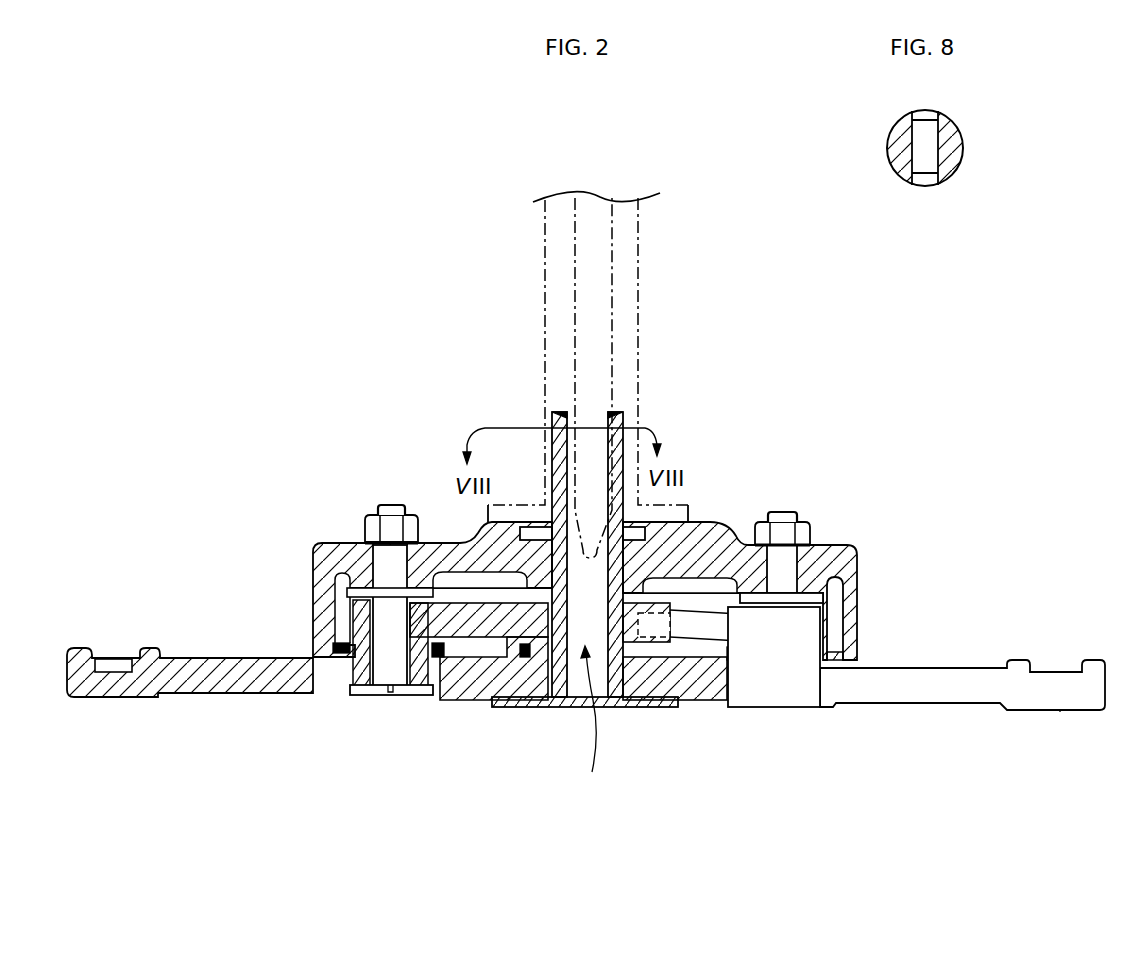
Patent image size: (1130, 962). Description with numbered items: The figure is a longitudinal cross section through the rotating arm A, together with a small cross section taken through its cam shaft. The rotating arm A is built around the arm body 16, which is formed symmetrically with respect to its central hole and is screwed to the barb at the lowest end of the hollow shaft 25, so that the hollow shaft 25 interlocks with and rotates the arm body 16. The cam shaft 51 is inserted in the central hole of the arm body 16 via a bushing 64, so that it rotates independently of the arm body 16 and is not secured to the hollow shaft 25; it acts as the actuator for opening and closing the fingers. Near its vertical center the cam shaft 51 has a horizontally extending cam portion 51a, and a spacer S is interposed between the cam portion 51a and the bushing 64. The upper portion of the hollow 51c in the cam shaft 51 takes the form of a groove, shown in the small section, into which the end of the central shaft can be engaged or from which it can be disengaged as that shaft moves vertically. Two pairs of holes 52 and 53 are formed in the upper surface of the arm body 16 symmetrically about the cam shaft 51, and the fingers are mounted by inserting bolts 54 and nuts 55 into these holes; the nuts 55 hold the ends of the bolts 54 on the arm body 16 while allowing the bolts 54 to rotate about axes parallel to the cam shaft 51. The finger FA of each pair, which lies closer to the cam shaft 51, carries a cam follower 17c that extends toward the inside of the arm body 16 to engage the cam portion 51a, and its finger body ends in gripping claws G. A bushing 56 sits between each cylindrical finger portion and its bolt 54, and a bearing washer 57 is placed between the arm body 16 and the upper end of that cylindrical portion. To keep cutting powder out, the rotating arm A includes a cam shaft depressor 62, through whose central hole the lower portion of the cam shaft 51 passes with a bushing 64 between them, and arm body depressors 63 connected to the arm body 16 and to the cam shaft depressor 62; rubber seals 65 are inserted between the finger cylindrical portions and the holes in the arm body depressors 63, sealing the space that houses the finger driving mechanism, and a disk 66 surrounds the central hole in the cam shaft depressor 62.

The arm body 16 is at (858, 582).
The hollow shaft 25 is at (640, 292).
The cam shaft 51 is at (618, 411).
The cam portion 51a is at (495, 693).
The hollow 51c is at (602, 700).
The holes 52 is at (749, 521).
The holes 53 is at (440, 463).
The bolts 54 is at (825, 548).
The nuts 55 is at (803, 534).
The bushing 56 is at (360, 697).
The bearing washer 57 is at (352, 580).
The cam shaft depressor 62 is at (703, 700).
The arm body depressor 63 is at (855, 658).
The bushing 64 is at (538, 552).
The rubber seals 65 is at (832, 632).
The disk 66 is at (593, 724).
The cam follower 17c is at (445, 697).
The spacer S is at (532, 604).
The finger FA is at (152, 650).
The gripping claws G is at (1058, 712).
The rotating arm A is at (292, 792).